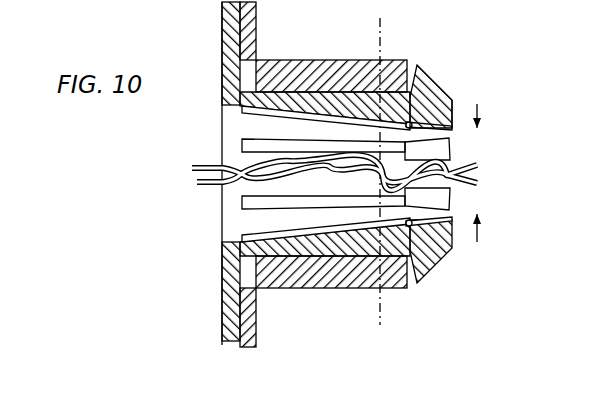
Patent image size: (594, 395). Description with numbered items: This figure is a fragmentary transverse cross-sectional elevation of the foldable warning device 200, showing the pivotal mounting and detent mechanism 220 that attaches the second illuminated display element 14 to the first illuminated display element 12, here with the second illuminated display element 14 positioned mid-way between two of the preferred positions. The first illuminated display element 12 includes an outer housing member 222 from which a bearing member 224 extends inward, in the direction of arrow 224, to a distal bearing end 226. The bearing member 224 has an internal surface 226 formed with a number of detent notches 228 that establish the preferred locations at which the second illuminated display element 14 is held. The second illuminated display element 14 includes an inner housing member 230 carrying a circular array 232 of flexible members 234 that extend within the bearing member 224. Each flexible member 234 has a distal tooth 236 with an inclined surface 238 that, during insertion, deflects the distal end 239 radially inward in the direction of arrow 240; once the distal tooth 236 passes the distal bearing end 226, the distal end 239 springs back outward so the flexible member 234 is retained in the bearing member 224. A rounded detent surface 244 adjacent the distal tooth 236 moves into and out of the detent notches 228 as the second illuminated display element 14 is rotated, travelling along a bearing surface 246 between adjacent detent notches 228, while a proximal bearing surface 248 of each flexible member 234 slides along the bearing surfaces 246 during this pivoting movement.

The first illuminated display element 12 is at (262, 22).
The second illuminated display element 14 is at (221, 282).
The foldable warning device 200 is at (215, 42).
The pivotal mounting and detent mechanism 220 is at (215, 97).
The outer housing member 222 is at (263, 43).
The bearing member 224 is at (342, 58).
The distal bearing end 226 is at (330, 141).
The detent notches 228 is at (290, 243).
The inner housing member 230 is at (221, 308).
The circular array 232 is at (246, 228).
The flexible member 234 is at (262, 114).
The distal tooth 236 is at (441, 283).
The inclined surface 238 is at (430, 66).
The distal end 239 is at (452, 107).
The arrow 240 is at (485, 118).
The rounded detent surface 244 is at (410, 96).
The bearing surface 246 is at (450, 217).
The proximal bearing surface 248 is at (262, 252).